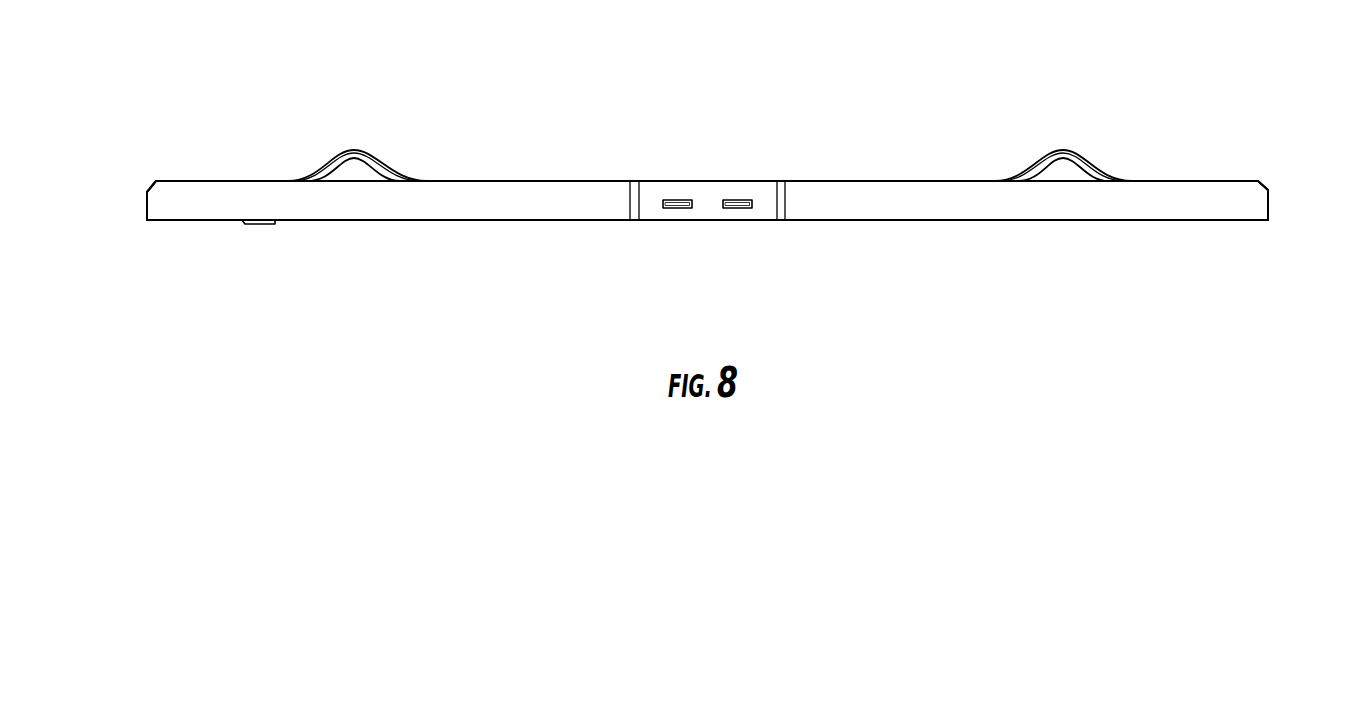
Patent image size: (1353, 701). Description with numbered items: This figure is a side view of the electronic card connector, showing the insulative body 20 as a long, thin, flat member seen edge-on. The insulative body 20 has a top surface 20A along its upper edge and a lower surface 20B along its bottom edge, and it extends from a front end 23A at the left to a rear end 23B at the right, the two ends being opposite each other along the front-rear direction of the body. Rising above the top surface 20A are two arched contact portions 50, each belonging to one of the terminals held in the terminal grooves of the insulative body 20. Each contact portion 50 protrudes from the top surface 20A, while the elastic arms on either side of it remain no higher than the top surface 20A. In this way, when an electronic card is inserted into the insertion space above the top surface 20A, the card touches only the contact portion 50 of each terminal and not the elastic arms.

The insulative body 20 is at (973, 214).
The top surface 20A is at (1190, 178).
The lower surface 20B is at (1225, 220).
The front end 23A is at (147, 204).
The rear end 23B is at (1255, 200).
The contact portion 50 is at (1068, 148).